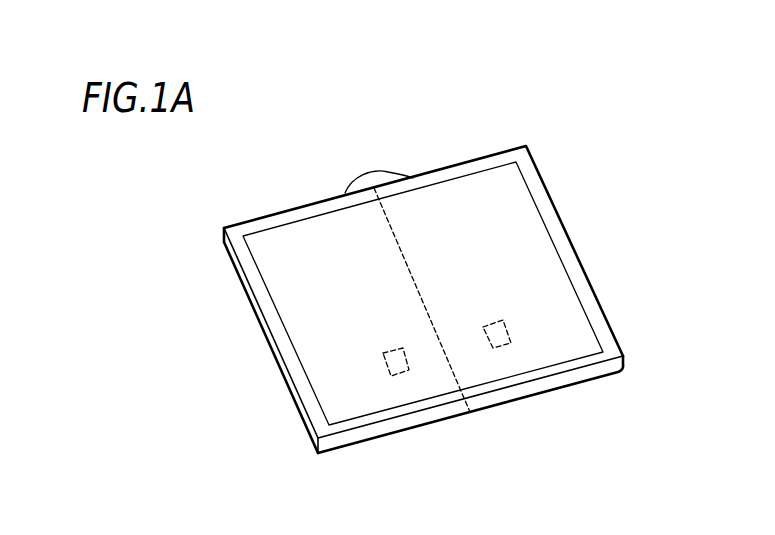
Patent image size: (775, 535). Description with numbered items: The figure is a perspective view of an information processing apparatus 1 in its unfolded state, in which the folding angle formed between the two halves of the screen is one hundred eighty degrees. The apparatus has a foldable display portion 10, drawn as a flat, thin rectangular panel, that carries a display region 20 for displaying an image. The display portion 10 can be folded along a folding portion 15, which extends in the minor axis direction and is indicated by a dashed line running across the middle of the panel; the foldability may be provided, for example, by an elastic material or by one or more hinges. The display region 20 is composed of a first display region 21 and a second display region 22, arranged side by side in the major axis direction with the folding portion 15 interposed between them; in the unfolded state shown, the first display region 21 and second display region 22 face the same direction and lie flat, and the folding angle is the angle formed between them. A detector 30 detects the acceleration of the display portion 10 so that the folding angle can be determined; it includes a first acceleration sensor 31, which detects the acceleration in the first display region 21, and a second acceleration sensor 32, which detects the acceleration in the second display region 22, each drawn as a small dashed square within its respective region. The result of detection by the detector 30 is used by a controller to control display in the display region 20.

The information processing apparatus 1 is at (673, 167).
The display portion 10 is at (561, 176).
The folding portion 15 is at (417, 280).
The display region 20 is at (478, 115).
The first display region 21 is at (308, 245).
The second display region 22 is at (448, 210).
The detector 30 is at (383, 475).
The first acceleration sensor 31 is at (397, 377).
The second acceleration sensor 32 is at (498, 348).